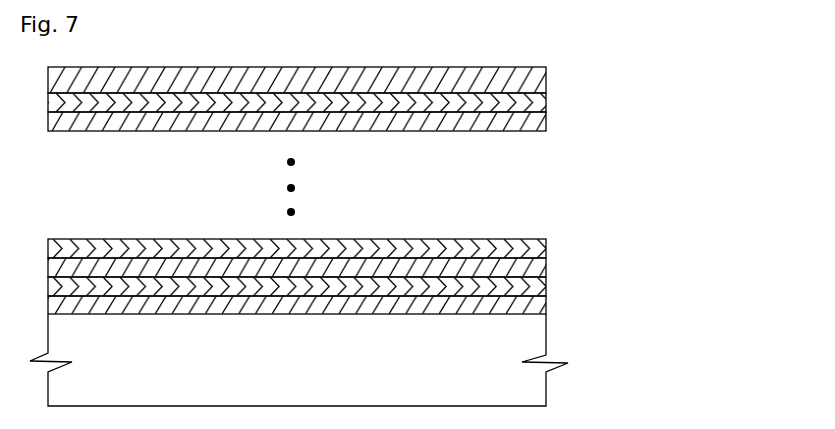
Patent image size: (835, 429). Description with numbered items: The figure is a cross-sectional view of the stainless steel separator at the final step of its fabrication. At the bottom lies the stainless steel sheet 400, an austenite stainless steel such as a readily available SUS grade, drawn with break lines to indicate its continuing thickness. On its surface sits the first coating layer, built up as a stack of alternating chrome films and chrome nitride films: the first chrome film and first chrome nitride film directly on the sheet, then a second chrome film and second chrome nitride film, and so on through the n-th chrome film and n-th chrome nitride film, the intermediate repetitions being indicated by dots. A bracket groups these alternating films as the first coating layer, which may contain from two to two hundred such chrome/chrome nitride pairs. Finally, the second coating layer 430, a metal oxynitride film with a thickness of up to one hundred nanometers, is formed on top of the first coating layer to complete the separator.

The second coating layer 430 is at (538, 78).
The stainless steel sheet 400 is at (538, 390).